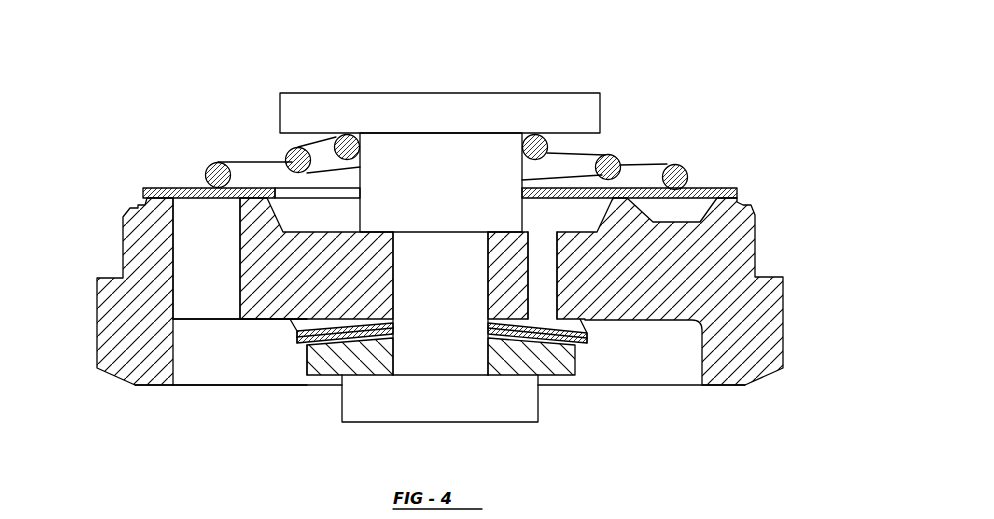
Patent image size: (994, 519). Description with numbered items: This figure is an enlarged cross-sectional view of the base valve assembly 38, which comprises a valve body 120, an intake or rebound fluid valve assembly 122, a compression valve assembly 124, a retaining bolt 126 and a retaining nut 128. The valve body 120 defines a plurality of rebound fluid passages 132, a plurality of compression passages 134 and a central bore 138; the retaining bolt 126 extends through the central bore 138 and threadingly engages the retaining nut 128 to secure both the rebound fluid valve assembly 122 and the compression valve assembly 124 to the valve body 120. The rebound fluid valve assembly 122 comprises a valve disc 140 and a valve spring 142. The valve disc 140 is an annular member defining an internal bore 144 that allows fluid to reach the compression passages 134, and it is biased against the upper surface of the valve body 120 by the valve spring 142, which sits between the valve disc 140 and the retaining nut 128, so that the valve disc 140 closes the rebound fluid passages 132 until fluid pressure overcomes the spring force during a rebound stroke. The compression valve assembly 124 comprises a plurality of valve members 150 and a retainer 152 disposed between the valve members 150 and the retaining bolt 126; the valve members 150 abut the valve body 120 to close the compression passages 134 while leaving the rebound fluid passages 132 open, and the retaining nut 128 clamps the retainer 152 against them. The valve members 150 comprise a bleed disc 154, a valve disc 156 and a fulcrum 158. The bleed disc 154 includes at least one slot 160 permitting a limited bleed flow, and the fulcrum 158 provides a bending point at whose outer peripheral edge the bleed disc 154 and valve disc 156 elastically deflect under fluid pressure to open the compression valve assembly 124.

The base valve assembly 38 is at (692, 81).
The valve body 120 is at (755, 313).
The rebound fluid valve assembly 122 is at (732, 138).
The compression valve assembly 124 is at (247, 403).
The retaining bolt 126 is at (443, 358).
The retaining nut 128 is at (456, 201).
The rebound fluid passages 132 is at (197, 262).
The compression passages 134 is at (547, 277).
The central bore 138 is at (393, 253).
The valve disc 140 is at (145, 188).
The valve spring 142 is at (218, 162).
The internal bore 144 is at (277, 192).
The valve members 150 is at (595, 343).
The retainer 152 is at (323, 365).
The bleed disc 154 is at (578, 327).
The valve disc 156 is at (556, 342).
The fulcrum 158 is at (507, 348).
The slot 160 is at (297, 333).